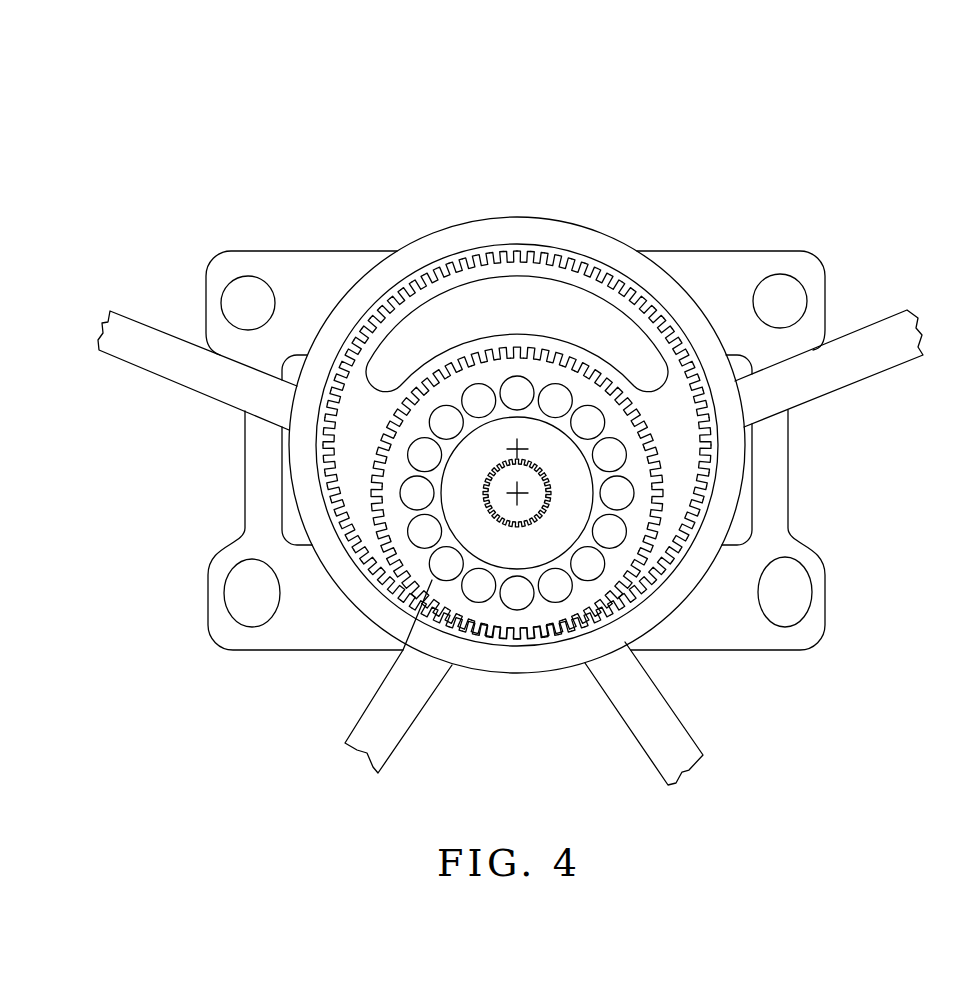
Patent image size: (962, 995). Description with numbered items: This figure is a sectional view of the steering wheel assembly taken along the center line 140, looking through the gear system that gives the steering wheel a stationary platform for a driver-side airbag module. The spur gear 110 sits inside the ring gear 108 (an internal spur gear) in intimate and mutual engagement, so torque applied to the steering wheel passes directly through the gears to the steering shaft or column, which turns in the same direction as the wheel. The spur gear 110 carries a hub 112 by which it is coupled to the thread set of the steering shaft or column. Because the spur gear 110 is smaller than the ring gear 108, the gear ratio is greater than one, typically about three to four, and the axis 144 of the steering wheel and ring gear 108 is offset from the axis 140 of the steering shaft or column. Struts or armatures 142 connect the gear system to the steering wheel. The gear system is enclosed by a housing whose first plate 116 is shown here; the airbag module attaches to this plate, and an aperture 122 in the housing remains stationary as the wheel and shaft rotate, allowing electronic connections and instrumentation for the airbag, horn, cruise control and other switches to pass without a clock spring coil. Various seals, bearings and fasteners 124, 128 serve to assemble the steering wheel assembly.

The ring gear 108 is at (576, 262).
The spur gear 110 is at (672, 490).
The hub 112 is at (507, 505).
The first plate 116 is at (703, 251).
The aperture 122 is at (430, 295).
The fastener 124 is at (470, 218).
The fastener 128 is at (455, 483).
The axis of the steering shaft or column 140 is at (525, 502).
The struts or armatures 142 is at (857, 330).
The axis of the steering wheel and ring gear 144 is at (522, 443).